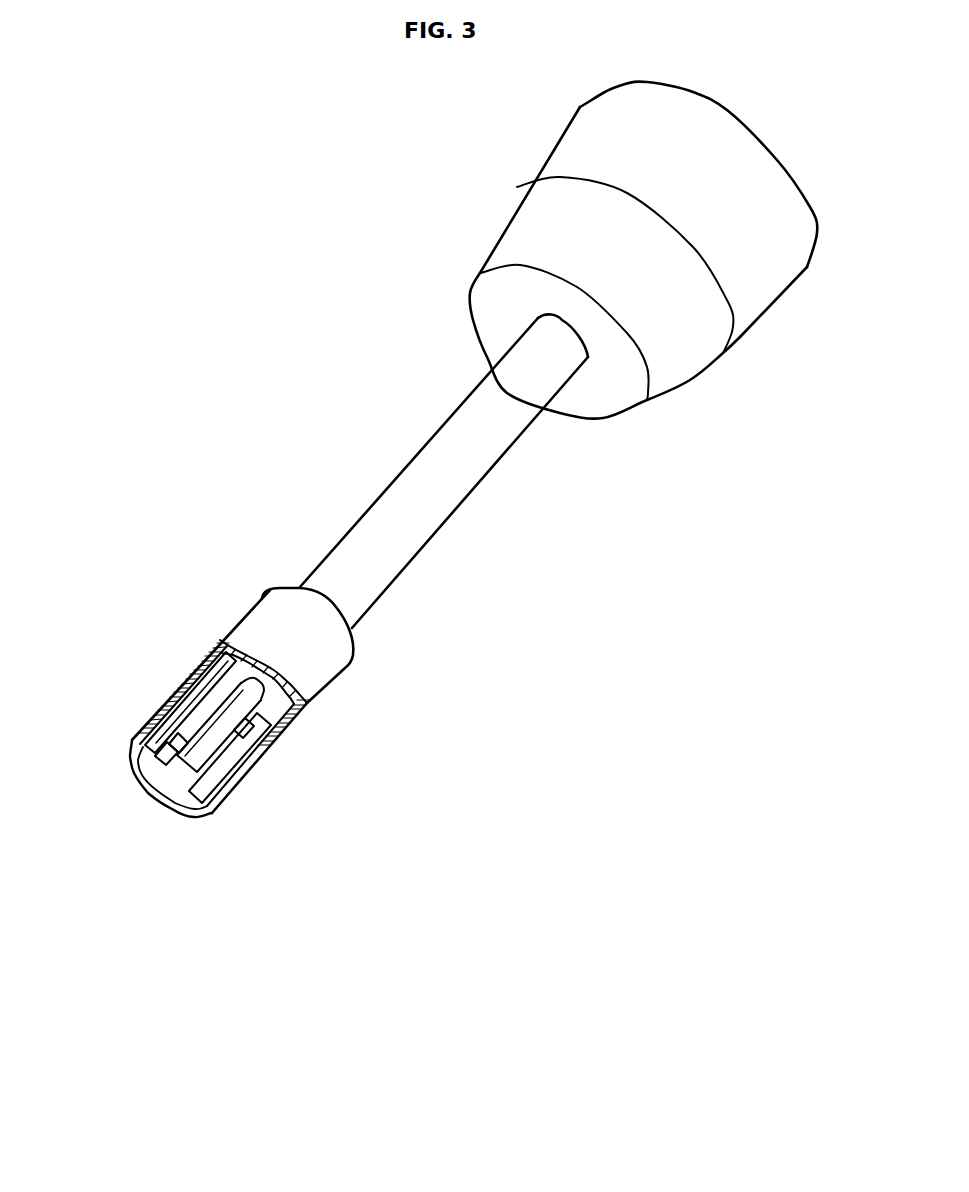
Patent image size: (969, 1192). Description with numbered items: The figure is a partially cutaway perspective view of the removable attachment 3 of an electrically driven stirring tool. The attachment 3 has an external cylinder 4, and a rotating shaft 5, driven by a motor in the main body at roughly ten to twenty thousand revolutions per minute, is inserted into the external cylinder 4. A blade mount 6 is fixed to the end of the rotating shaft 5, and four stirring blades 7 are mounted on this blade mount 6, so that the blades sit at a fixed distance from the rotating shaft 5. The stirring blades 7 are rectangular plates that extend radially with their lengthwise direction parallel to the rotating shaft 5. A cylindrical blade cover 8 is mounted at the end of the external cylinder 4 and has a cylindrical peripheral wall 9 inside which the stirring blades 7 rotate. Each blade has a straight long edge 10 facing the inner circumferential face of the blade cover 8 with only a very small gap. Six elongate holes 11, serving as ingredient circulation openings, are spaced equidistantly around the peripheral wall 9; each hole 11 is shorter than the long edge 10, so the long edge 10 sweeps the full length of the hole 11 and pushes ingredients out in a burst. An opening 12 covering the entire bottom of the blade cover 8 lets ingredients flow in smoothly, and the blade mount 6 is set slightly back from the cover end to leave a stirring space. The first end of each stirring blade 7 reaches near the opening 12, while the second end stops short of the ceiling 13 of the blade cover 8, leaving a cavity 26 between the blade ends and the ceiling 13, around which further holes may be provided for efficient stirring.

The attachment 3 is at (476, 226).
The external cylinder 4 is at (430, 447).
The rotating shaft 5 is at (242, 700).
The blade mount 6 is at (166, 797).
The stirring blade 7 is at (187, 688).
The blade cover 8 is at (285, 727).
The peripheral wall 9 is at (165, 718).
The long edge 10 is at (258, 743).
The hole 11 is at (240, 777).
The opening 12 is at (180, 780).
The ceiling 13 is at (290, 702).
The cavity 26 is at (208, 687).